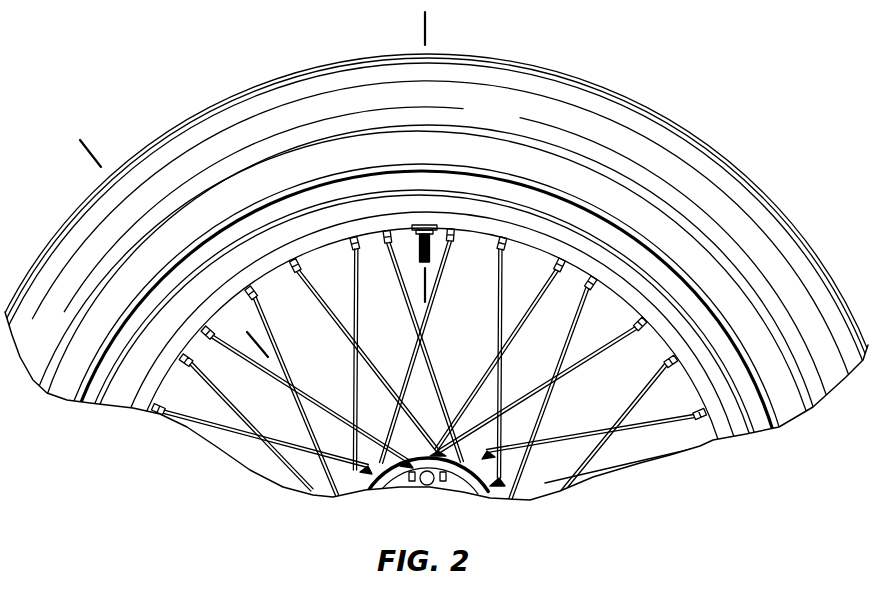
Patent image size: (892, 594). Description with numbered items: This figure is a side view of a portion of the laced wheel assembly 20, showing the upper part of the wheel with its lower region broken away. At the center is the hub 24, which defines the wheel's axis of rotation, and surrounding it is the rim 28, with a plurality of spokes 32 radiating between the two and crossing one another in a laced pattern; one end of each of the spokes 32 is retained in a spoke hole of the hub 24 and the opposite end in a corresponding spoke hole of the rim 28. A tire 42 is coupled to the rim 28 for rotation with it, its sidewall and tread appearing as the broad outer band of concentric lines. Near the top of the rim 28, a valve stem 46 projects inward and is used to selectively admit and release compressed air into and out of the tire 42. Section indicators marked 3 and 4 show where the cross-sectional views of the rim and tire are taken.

The laced wheel assembly 20 is at (686, 89).
The hub 24 is at (455, 458).
The rim 28 is at (668, 300).
The spokes 32 is at (588, 363).
The tire 42 is at (562, 115).
The valve stem 46 is at (433, 254).
The section line 3 is at (96, 151).
The section line 4 is at (414, 22).